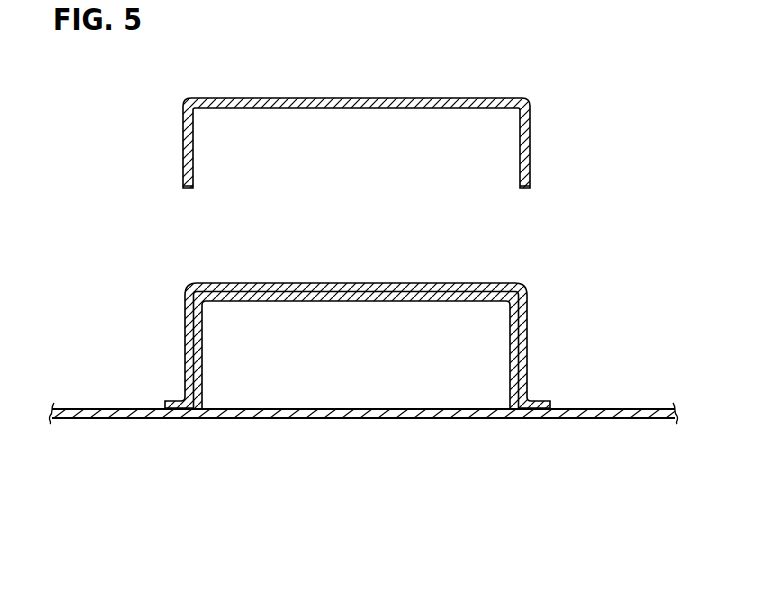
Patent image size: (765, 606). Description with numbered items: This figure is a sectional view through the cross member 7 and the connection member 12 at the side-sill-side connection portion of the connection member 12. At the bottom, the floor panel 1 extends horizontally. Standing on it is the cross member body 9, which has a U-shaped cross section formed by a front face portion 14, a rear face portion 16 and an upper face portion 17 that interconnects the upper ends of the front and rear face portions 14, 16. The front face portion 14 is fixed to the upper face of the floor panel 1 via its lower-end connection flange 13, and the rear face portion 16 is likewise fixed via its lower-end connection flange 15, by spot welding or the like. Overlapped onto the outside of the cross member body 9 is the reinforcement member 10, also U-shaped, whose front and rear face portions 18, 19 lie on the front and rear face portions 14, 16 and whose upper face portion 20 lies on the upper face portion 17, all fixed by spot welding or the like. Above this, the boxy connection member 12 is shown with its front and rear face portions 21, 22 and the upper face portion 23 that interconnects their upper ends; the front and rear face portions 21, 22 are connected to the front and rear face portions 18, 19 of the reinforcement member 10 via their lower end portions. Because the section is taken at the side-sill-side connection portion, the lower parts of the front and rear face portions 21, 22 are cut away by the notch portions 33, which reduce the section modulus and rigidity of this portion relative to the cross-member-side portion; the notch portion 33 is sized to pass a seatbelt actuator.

The floor panel 1 is at (340, 419).
The cross member 7 is at (357, 313).
The cross member body 9 is at (496, 324).
The reinforcement member 10 is at (356, 341).
The connection member 12 is at (356, 117).
The lower-end connection flange 13 is at (537, 401).
The front face portion 14 is at (508, 385).
The lower-end connection flange 15 is at (178, 400).
The rear face portion 16 is at (205, 384).
The upper face portion 17 is at (355, 302).
The front face portion 18 is at (528, 333).
The rear face portion 19 is at (185, 325).
The upper face portion 20 is at (377, 283).
The front face portion 21 is at (530, 138).
The rear face portion 22 is at (183, 142).
The upper face portion 23 is at (323, 97).
The notch portion 33 is at (188, 212).